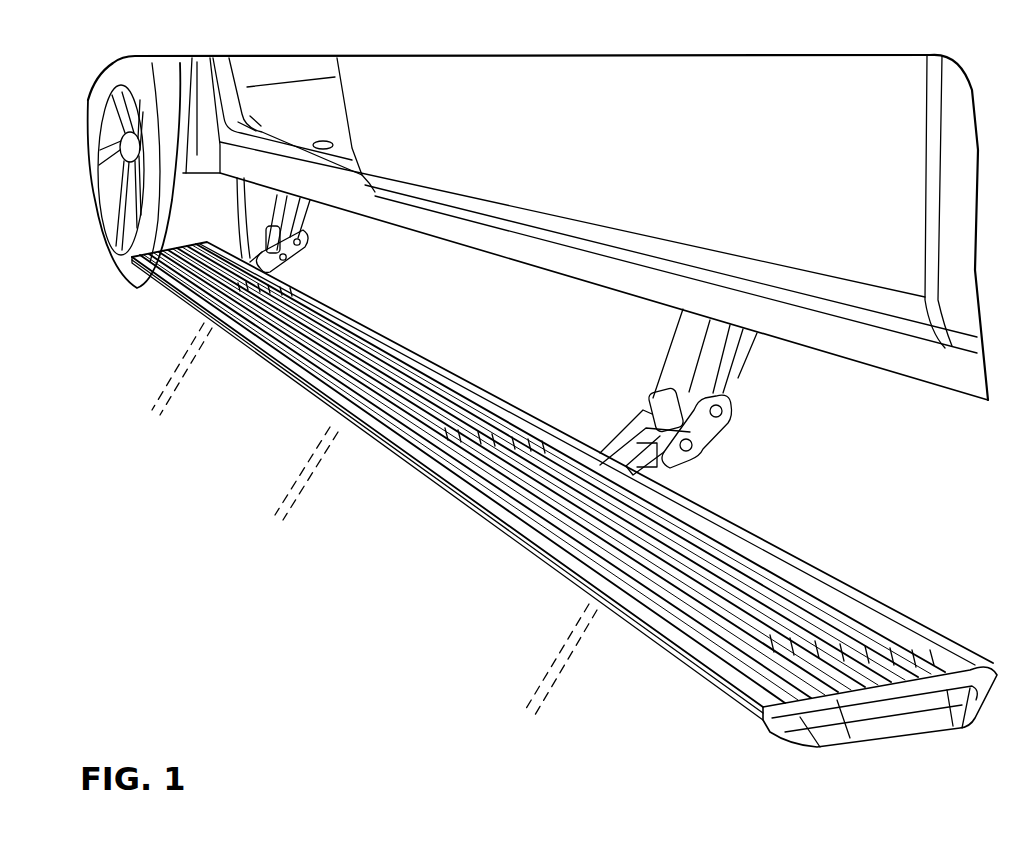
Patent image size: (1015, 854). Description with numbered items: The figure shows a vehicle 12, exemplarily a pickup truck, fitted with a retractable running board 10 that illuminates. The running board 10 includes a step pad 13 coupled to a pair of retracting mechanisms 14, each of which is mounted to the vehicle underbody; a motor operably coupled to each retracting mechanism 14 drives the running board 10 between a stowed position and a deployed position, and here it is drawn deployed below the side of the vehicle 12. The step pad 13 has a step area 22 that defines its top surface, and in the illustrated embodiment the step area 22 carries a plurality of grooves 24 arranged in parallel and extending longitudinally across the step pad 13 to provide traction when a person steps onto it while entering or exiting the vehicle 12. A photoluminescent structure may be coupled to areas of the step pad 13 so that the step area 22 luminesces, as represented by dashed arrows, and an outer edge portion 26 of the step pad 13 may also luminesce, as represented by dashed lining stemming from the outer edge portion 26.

The running board 10 is at (564, 523).
The vehicle 12 is at (853, 360).
The step pad 13 is at (893, 728).
The retracting mechanisms 14 is at (283, 212).
The step area 22 is at (725, 580).
The grooves 24 is at (530, 485).
The outer edge portion 26 is at (408, 460).